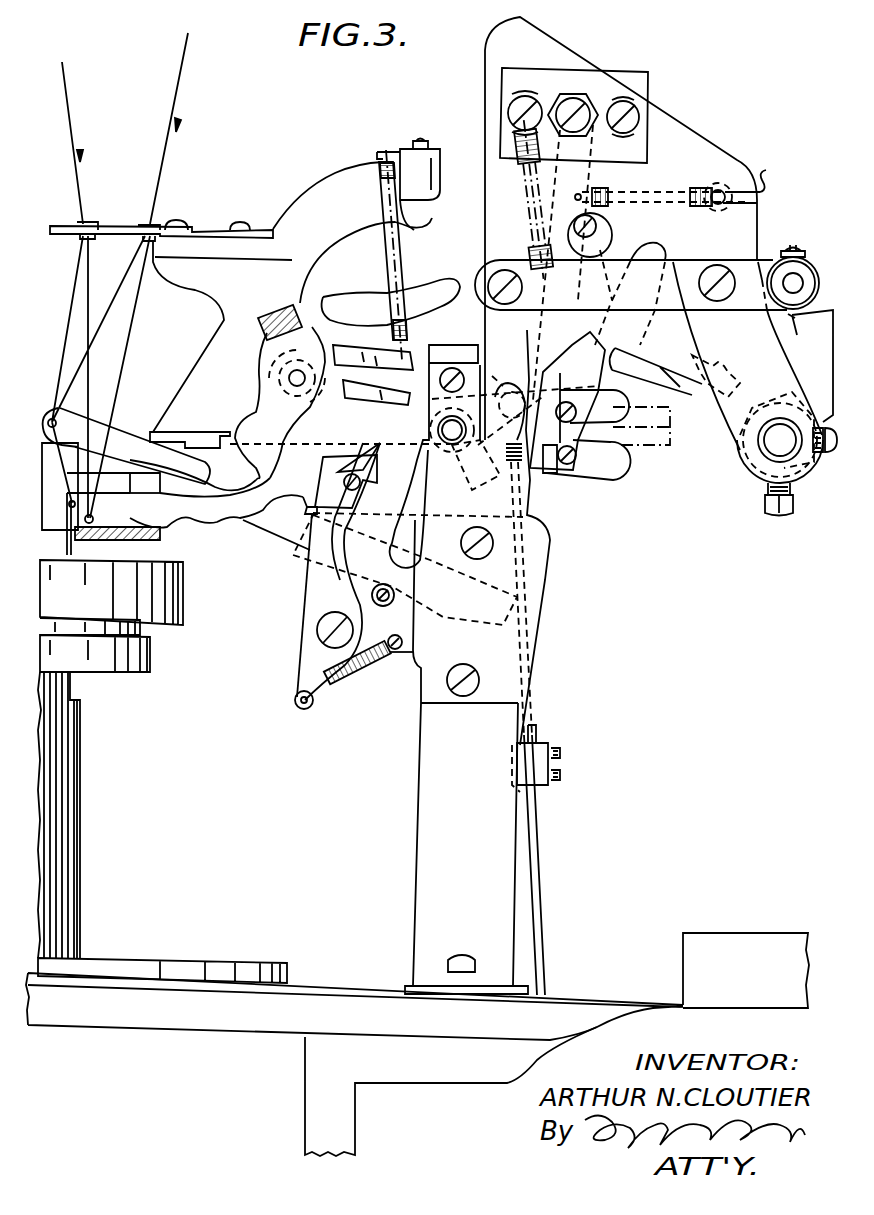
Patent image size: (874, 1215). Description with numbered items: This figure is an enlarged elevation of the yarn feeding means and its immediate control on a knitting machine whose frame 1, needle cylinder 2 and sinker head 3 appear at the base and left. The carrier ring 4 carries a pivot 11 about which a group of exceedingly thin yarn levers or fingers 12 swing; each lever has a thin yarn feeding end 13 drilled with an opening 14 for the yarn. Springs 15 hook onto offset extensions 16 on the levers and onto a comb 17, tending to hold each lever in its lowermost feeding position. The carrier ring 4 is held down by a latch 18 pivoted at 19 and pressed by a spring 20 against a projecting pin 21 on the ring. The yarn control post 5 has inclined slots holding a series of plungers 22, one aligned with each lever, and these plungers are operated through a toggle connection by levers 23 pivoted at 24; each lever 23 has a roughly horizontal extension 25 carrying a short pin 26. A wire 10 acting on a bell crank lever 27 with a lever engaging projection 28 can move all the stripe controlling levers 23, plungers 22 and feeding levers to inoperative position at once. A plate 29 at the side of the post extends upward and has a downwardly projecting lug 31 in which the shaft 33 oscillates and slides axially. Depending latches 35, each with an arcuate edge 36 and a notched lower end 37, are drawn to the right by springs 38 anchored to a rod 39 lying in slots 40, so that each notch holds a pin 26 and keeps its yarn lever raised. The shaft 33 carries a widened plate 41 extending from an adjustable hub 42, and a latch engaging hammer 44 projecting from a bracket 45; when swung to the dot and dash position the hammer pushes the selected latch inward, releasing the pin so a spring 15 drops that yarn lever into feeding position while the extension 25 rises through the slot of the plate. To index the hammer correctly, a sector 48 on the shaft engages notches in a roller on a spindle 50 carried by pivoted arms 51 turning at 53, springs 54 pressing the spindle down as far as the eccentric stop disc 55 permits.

The frame 1 is at (305, 1073).
The needle cylinder 2 is at (78, 740).
The sinker head 3 is at (183, 603).
The carrier ring 4 is at (186, 434).
The yarn control lever bracket or post 5 is at (428, 770).
The wire 10 is at (542, 822).
The pivot 11 is at (289, 378).
The yarn lever or finger 12 is at (126, 420).
The yarn feeding end 13 is at (78, 415).
The opening 14 is at (62, 448).
The spring 15 is at (396, 328).
The extension 16 is at (378, 355).
The comb 17 is at (388, 150).
The latch 18 is at (380, 448).
The pivot 19 is at (318, 630).
The spring 20 is at (340, 688).
The projecting pin 21 is at (348, 484).
The plunger 22 is at (285, 524).
The lever 23 is at (432, 445).
The pivot 24 is at (452, 430).
The extension 25 is at (608, 482).
The pin 26 is at (574, 462).
The bell crank lever 27 is at (511, 544).
The lever engaging projection 28 is at (465, 505).
The plate 29 is at (540, 572).
The ear or lug 31 is at (735, 438).
The shaft 33 is at (780, 440).
The latch 35 is at (578, 194).
The arcuate or curved edge 36 is at (566, 380).
The notched lower end 37 is at (553, 474).
The spring 38 is at (632, 188).
The bar or rod 39 is at (718, 212).
The slot 40 is at (757, 194).
The widened plate 41 is at (662, 442).
The hub 42 is at (773, 400).
The latch engaging hammer 44 is at (640, 248).
The bracket 45 is at (685, 358).
The sector 48 is at (793, 352).
The spindle 50 is at (803, 262).
The arm 51 is at (765, 288).
The pivot 53 is at (720, 268).
The spring 54 is at (495, 212).
The eccentric stop disc 55 is at (590, 235).